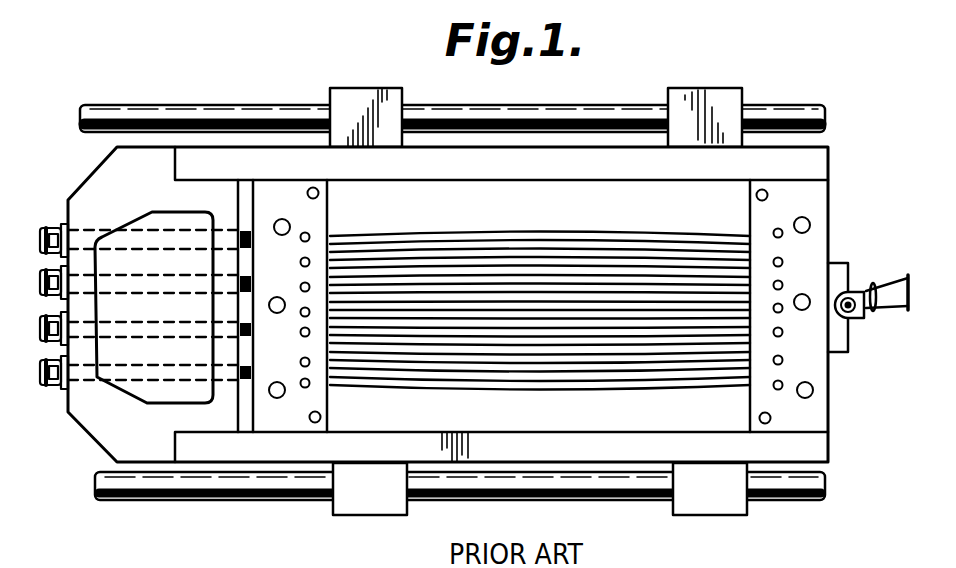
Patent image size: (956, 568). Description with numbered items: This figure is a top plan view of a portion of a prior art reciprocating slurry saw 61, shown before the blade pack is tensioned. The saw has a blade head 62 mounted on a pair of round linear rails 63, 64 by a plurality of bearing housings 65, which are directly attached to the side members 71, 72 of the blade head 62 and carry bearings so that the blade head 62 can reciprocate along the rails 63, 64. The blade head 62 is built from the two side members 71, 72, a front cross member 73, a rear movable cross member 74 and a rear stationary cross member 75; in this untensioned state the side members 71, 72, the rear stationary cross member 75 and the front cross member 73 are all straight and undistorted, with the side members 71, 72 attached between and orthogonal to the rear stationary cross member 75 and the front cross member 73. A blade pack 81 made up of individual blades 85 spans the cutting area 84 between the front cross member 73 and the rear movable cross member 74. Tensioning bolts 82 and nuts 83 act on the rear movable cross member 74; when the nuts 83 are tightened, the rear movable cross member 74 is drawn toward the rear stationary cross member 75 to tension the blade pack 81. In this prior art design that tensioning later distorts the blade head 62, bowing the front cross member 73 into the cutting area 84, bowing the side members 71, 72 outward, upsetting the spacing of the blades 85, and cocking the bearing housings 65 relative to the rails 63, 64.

The prior art slurry saw 61 is at (690, 66).
The blade head 62 is at (279, 141).
The round linear rail 63 is at (292, 487).
The round linear rail 64 is at (246, 104).
The bearing housings 65 is at (373, 500).
The side member 71 is at (508, 181).
The side member 72 is at (505, 432).
The front cross member 73 is at (760, 226).
The rear movable cross member 74 is at (326, 224).
The rear stationary cross member 75 is at (109, 174).
The blade pack 81 is at (577, 203).
The tensioning bolts 82 is at (176, 213).
The nuts 83 is at (56, 222).
The cutting area 84 is at (382, 416).
The individual blades 85 is at (656, 385).